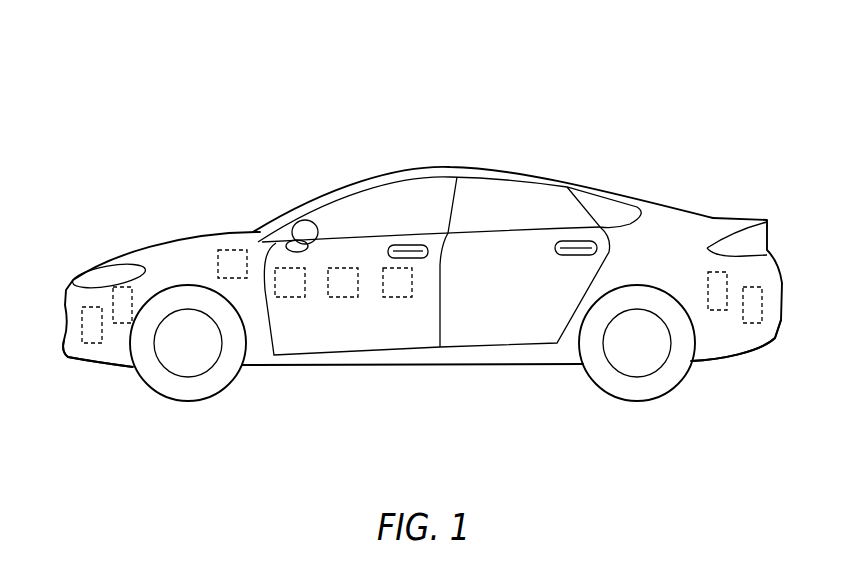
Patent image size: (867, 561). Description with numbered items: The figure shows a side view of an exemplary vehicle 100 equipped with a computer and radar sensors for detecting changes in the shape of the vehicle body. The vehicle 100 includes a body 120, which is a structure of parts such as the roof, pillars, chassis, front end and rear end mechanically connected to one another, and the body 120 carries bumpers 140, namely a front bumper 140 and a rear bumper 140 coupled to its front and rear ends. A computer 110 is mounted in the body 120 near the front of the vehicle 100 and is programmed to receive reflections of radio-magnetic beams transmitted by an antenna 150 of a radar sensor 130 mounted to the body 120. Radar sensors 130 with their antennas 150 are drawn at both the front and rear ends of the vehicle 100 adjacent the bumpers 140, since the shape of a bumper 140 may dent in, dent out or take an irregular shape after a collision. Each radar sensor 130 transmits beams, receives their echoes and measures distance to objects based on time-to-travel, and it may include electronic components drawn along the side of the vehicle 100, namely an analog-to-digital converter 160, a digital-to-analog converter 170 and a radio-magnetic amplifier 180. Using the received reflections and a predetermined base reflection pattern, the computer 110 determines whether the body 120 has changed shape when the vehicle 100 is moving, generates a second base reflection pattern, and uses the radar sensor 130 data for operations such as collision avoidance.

The vehicle 100 is at (672, 33).
The computer 110 is at (231, 250).
The body 120 is at (463, 168).
The radar sensor 130 is at (92, 307).
The bumper 140 is at (70, 357).
The antenna 150 is at (118, 287).
The analog-to-digital converter 160 is at (290, 297).
The digital-to-analog converter 170 is at (345, 297).
The radio-magnetic amplifier 180 is at (398, 297).